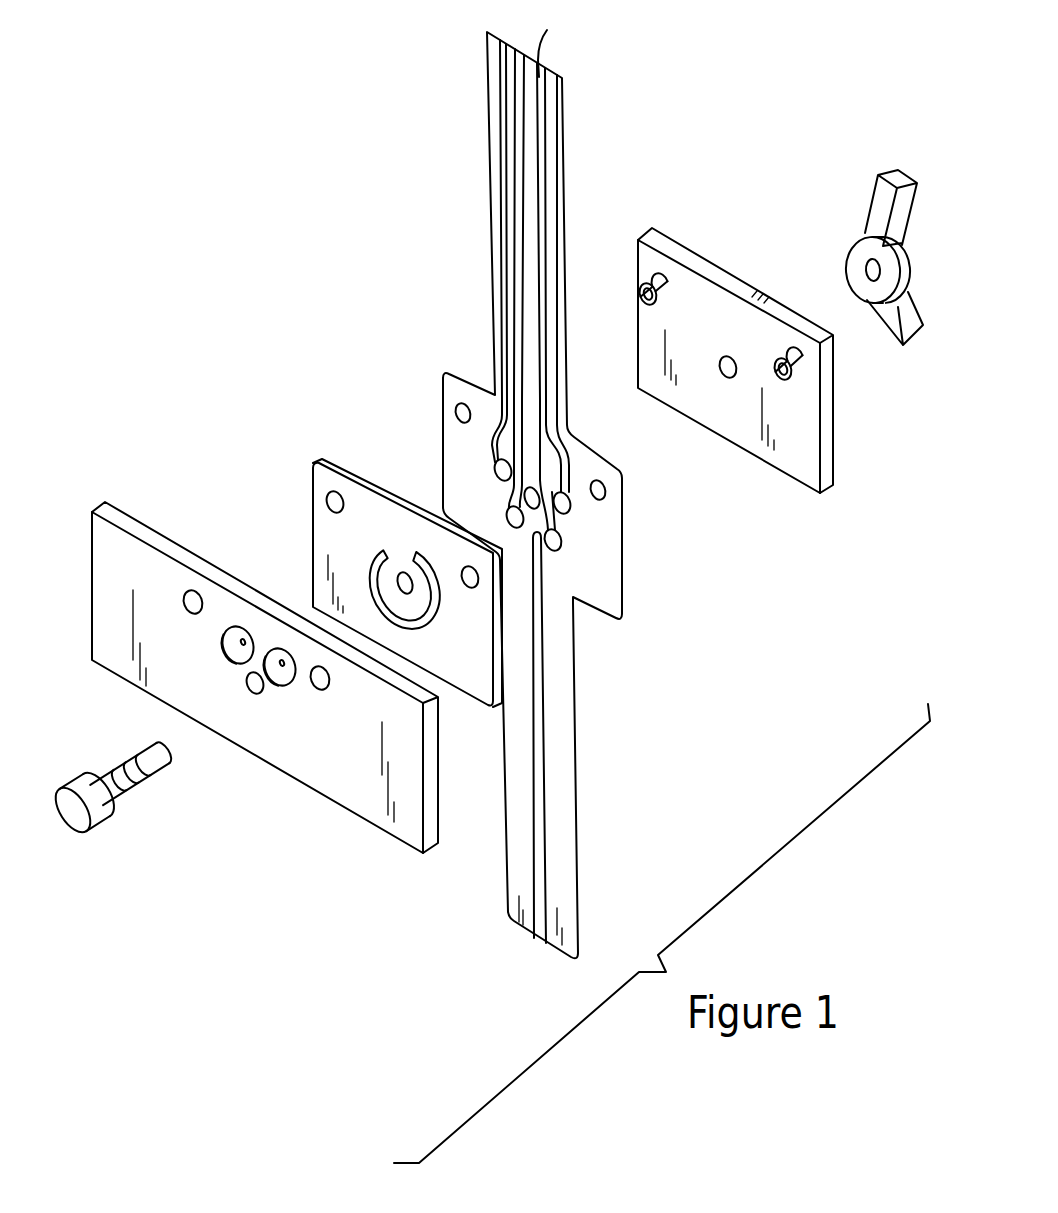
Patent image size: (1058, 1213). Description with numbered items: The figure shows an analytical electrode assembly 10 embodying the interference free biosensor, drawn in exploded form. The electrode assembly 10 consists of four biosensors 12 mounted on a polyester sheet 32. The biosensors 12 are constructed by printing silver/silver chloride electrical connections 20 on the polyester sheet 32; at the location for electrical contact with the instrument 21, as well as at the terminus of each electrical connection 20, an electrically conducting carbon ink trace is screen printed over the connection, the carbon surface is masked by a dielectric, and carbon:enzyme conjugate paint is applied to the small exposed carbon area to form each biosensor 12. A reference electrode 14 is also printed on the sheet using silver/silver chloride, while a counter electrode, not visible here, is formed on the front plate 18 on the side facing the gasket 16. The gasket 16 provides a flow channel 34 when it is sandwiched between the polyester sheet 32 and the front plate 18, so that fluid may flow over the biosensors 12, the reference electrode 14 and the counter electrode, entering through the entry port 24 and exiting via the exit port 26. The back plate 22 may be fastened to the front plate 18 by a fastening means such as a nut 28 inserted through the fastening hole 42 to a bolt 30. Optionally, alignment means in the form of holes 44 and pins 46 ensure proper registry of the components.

The electrode assembly 10 is at (297, 312).
The biosensors 12 is at (497, 466).
The reference electrode 14 is at (548, 556).
The gasket 16 is at (325, 532).
The front plate 18 is at (128, 557).
The electrical connections 20 is at (502, 197).
The location for electrical contact with the instrument 21 is at (537, 70).
The back plate 22 is at (703, 290).
The entry port 24 is at (237, 647).
The exit port 26 is at (280, 657).
The nut 28 is at (147, 780).
The bolt 30 is at (862, 252).
The polyester sheet 32 is at (443, 418).
The flow channel 34 is at (432, 620).
The fastening hole 42 is at (525, 497).
The holes 44 is at (330, 497).
The pins 46 is at (787, 357).